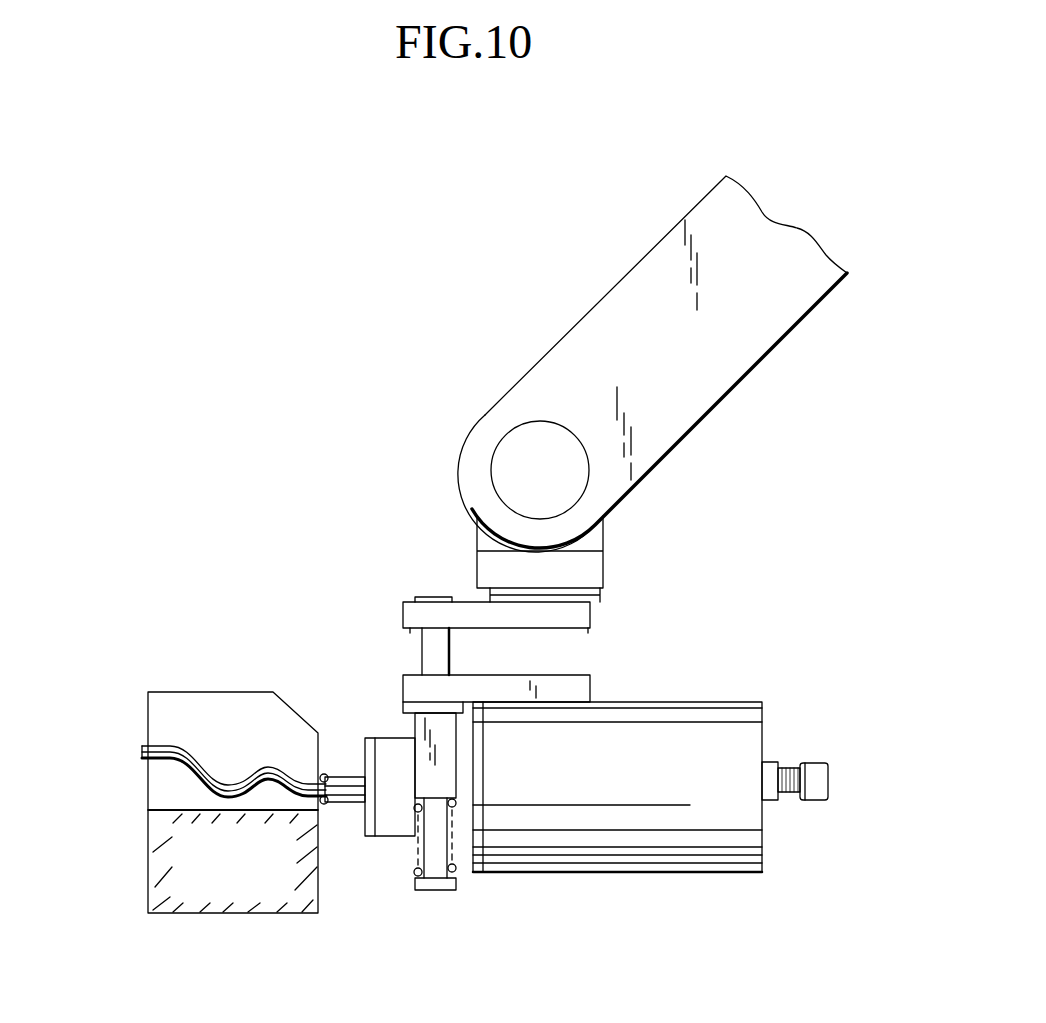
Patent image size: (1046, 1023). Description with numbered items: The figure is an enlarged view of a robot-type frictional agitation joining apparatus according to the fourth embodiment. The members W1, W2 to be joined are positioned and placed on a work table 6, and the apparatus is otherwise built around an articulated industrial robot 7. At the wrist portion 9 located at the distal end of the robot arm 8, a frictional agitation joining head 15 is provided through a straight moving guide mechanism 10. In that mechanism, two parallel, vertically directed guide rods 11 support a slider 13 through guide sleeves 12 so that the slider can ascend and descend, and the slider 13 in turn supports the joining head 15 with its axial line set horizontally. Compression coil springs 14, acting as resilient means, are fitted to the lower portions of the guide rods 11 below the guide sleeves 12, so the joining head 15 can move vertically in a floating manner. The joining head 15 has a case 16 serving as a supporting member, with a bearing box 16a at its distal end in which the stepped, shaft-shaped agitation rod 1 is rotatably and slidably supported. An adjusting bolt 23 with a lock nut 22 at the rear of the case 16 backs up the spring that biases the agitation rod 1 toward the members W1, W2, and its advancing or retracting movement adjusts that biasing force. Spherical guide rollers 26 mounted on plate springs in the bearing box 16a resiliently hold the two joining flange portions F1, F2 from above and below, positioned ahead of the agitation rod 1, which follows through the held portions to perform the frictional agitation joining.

The agitation rod 1 is at (342, 783).
The work table 6 is at (220, 903).
The robot 7 is at (652, 364).
The robot arm 8 is at (703, 393).
The wrist portion 9 is at (603, 565).
The straight moving guide mechanism 10 is at (412, 650).
The guide rods 11 is at (450, 660).
The guide sleeves 12 is at (450, 762).
The slider 13 is at (582, 682).
The compression coil springs 14 is at (453, 870).
The frictional agitation joining head 15 is at (577, 875).
The case 16 is at (682, 872).
The bearing box 16a is at (390, 836).
The lock nut 22 is at (768, 800).
The adjusting bolt 23 is at (808, 762).
The guide rollers 26 is at (327, 805).
The member to be joined W1 is at (242, 692).
The member to be joined W2 is at (148, 782).
The joining flange portion F1 is at (162, 745).
The joining flange portion F2 is at (229, 722).